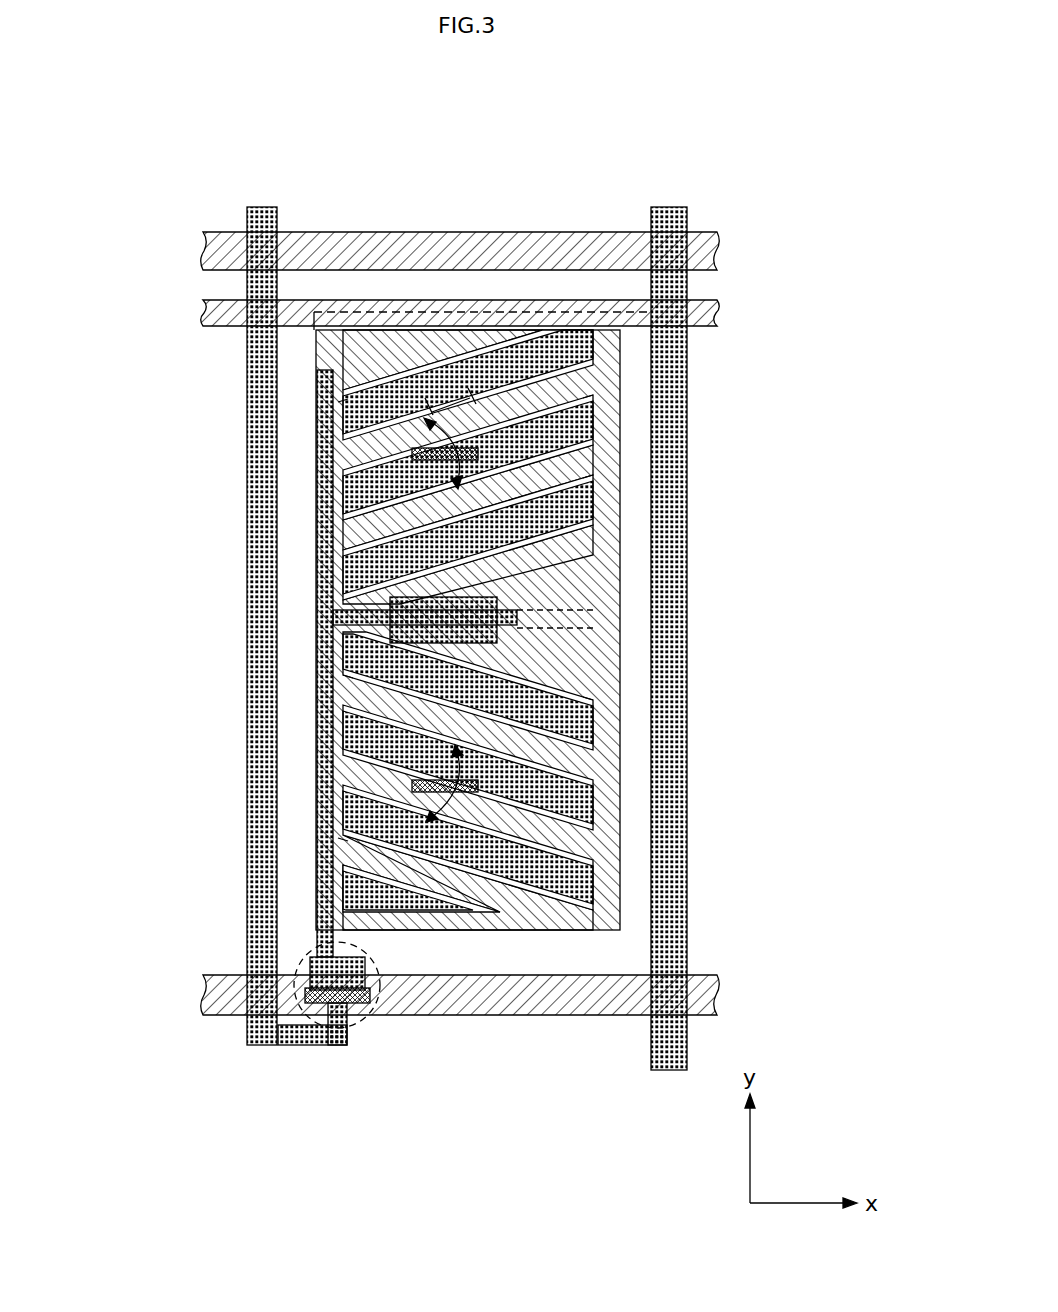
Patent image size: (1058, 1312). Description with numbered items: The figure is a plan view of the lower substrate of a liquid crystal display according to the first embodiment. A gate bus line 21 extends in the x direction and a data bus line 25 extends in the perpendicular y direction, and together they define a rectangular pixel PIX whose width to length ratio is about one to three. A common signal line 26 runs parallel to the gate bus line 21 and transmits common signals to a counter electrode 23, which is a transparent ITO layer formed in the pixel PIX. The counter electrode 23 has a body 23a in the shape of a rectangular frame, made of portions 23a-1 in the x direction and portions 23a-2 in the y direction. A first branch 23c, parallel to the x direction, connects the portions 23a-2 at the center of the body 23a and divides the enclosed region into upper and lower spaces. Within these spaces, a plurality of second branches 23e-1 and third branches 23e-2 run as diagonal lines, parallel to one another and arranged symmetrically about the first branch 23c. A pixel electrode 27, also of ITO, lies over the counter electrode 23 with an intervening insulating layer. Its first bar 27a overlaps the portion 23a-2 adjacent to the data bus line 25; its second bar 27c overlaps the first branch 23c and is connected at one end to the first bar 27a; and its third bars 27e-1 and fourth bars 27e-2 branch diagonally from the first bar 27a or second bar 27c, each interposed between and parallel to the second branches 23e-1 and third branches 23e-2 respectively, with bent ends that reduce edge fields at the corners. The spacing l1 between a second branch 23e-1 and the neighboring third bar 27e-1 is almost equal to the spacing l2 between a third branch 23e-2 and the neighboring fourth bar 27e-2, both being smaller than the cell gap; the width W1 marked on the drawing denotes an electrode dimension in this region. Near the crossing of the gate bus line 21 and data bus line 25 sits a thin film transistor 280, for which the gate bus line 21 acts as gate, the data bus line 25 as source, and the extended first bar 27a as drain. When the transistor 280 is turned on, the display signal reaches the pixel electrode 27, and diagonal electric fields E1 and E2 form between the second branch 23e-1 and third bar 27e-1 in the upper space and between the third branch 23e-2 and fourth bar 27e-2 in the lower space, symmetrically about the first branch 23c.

The gate bus line 21 is at (721, 246).
The counter electrode 23 is at (611, 630).
The body 23a is at (598, 524).
The portion of the body in the x direction 23a-1 is at (596, 470).
The portion of the body in the y direction 23a-2 is at (596, 550).
The first branch 23c is at (596, 620).
The second branch 23e-1 is at (596, 393).
The third branch 23e-2 is at (561, 853).
The data bus line 25 is at (266, 209).
The common signal line 26 is at (721, 306).
The pixel electrode 27 is at (346, 643).
The first bar 27a is at (325, 576).
The second bar 27c is at (338, 620).
The third bar 27e-1 is at (340, 472).
The fourth bar 27e-2 is at (340, 680).
The thin film transistor 280 is at (364, 1021).
The pixel PIX is at (396, 293).
The electric field E1 is at (596, 374).
The electric field E2 is at (596, 656).
The gap width W1 is at (454, 390).
The distance l1 is at (338, 402).
The distance l2 is at (338, 838).